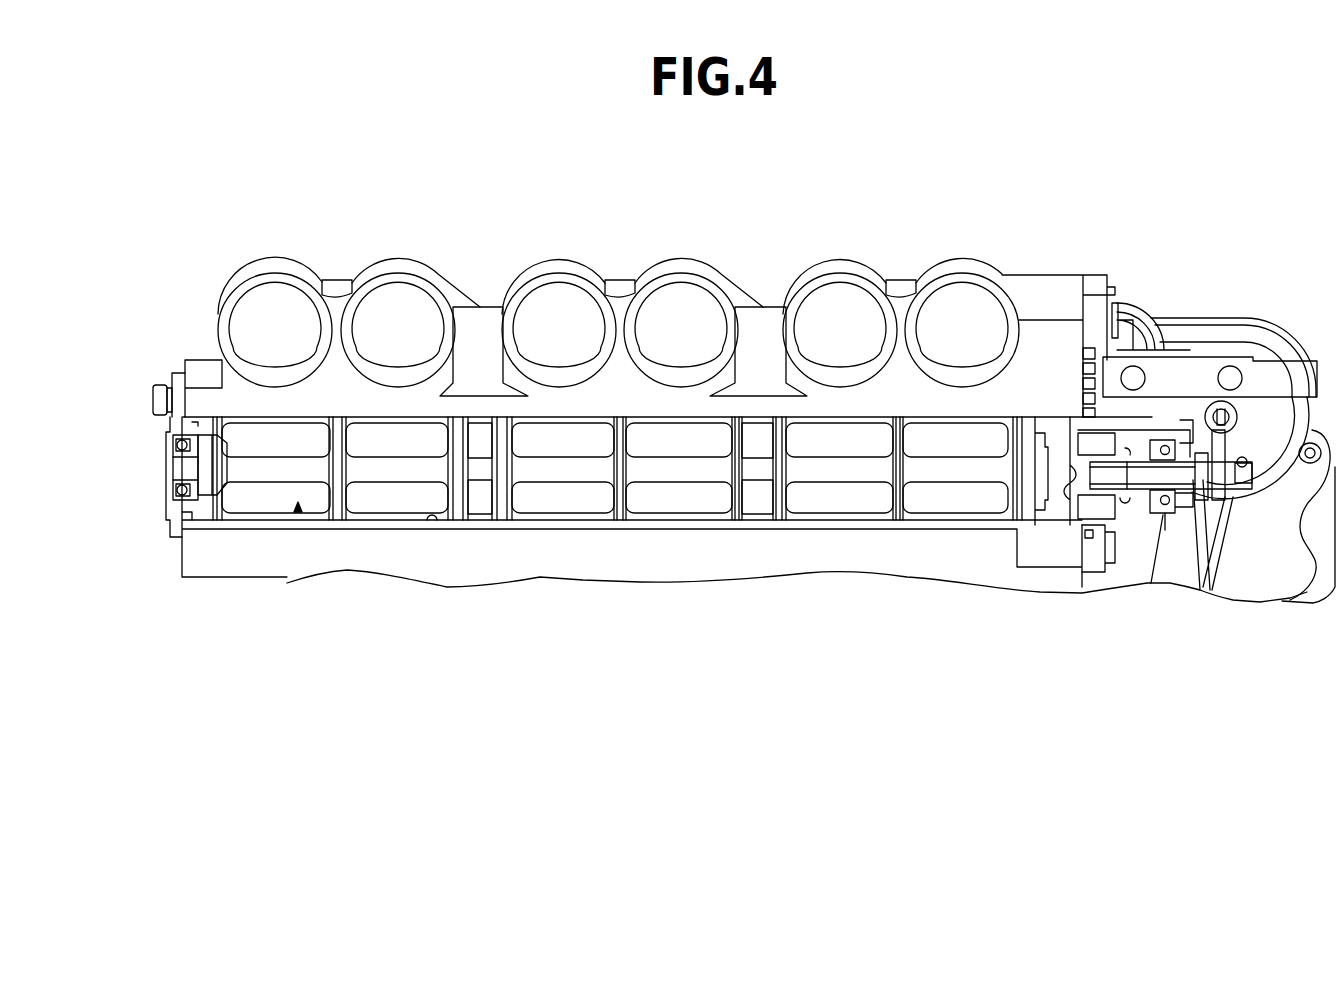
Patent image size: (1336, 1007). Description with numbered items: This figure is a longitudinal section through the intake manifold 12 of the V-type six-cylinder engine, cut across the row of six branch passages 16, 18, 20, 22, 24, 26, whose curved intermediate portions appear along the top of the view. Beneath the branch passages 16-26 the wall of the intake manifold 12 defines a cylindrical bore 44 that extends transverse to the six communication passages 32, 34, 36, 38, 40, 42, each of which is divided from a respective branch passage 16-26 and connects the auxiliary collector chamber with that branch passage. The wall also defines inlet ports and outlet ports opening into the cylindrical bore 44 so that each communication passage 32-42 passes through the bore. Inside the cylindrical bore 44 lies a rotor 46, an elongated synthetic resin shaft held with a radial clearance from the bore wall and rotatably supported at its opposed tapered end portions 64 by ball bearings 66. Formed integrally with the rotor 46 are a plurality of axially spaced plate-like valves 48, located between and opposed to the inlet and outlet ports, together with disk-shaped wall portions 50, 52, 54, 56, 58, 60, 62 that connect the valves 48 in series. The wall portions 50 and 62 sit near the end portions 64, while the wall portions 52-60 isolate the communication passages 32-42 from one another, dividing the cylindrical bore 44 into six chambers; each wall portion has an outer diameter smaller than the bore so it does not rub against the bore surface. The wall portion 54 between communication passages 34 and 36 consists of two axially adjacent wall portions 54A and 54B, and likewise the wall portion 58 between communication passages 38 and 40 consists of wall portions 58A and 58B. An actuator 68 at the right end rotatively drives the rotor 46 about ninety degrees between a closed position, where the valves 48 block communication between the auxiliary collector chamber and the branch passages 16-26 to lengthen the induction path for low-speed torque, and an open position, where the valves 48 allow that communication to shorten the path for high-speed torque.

The intake manifold 12 is at (168, 246).
The branch passage 16 is at (274, 298).
The branch passage 18 is at (396, 298).
The branch passage 20 is at (557, 298).
The branch passage 22 is at (679, 298).
The branch passage 24 is at (838, 298).
The branch passage 26 is at (961, 298).
The communication passage 32 is at (247, 505).
The communication passage 34 is at (388, 505).
The communication passage 36 is at (595, 505).
The communication passage 38 is at (680, 505).
The communication passage 40 is at (873, 505).
The communication passage 42 is at (988, 508).
The cylindrical bore 44 is at (430, 520).
The rotor 46 is at (298, 510).
The valves 48 is at (277, 468).
The wall portion 50 is at (220, 522).
The wall portion 52 is at (330, 520).
The wall portion 54 is at (553, 660).
The wall portion 54A is at (462, 512).
The wall portion 54B is at (505, 512).
The wall portion 56 is at (619, 522).
The wall portion 58 is at (833, 660).
The wall portion 58A is at (738, 522).
The wall portion 58B is at (781, 520).
The wall portion 60 is at (905, 520).
The wall portion 62 is at (1025, 517).
The tapered end portions 64 is at (172, 468).
The ball bearings 66 is at (178, 467).
The actuator 68 is at (1232, 332).